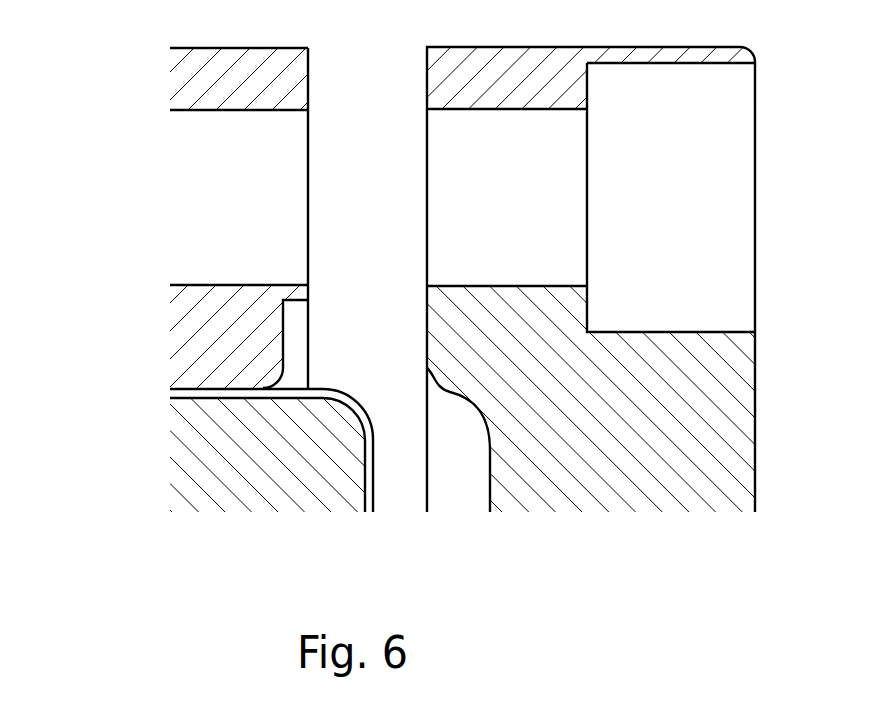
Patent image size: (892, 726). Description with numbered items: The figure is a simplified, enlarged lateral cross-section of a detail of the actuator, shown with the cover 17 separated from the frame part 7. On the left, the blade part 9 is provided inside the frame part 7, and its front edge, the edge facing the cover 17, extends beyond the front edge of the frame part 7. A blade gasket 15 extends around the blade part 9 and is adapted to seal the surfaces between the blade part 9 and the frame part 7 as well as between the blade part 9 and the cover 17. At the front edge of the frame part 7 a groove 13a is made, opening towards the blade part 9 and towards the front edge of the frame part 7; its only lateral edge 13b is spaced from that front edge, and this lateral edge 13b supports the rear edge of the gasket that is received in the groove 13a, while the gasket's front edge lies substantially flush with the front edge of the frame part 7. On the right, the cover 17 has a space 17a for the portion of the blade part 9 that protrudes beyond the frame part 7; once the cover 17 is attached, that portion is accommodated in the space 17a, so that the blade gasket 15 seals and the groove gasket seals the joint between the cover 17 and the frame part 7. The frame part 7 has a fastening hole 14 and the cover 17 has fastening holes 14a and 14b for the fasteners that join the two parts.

The frame part 7 is at (178, 80).
The blade part 9 is at (175, 500).
The groove 13a is at (302, 350).
The lateral edge 13b is at (282, 353).
The fastening hole 14 is at (245, 215).
The fastening hole 14a is at (538, 213).
The fastening hole 14b is at (700, 213).
The blade gasket 15 is at (181, 389).
The cover 17 is at (745, 452).
The space 17a is at (452, 500).